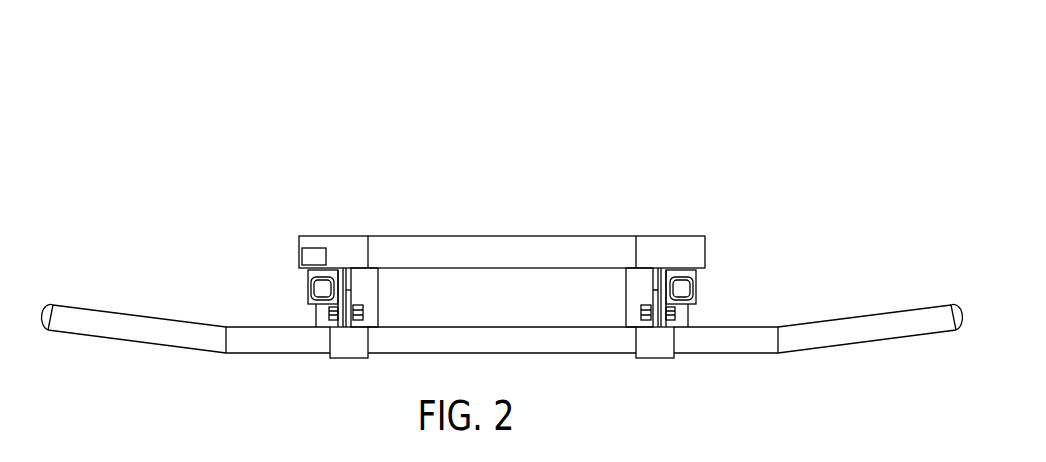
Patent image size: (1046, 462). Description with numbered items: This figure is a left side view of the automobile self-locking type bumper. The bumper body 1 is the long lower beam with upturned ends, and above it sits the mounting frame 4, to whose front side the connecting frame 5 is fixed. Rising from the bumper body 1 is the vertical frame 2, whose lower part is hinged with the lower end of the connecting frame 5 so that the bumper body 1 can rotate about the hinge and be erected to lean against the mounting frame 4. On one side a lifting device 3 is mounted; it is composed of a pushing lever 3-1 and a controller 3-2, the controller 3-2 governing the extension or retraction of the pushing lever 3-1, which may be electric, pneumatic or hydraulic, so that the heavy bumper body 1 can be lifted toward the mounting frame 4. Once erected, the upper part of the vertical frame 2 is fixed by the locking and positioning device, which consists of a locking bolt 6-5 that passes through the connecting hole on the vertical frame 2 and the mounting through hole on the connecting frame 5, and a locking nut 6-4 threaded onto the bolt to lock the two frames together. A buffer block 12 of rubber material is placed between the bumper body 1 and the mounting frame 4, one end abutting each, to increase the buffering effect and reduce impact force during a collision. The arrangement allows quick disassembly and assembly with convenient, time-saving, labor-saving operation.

The bumper body 1 is at (543, 345).
The vertical frame 2 is at (350, 288).
The lifting device 3 is at (257, 172).
The pushing lever 3-1 is at (309, 282).
The controller 3-2 is at (313, 257).
The mounting frame 4 is at (452, 252).
The connecting frame 5 is at (343, 282).
The buffer block 12 is at (370, 295).
The locking nut 6-4 is at (670, 310).
The locking bolt 6-5 is at (648, 300).